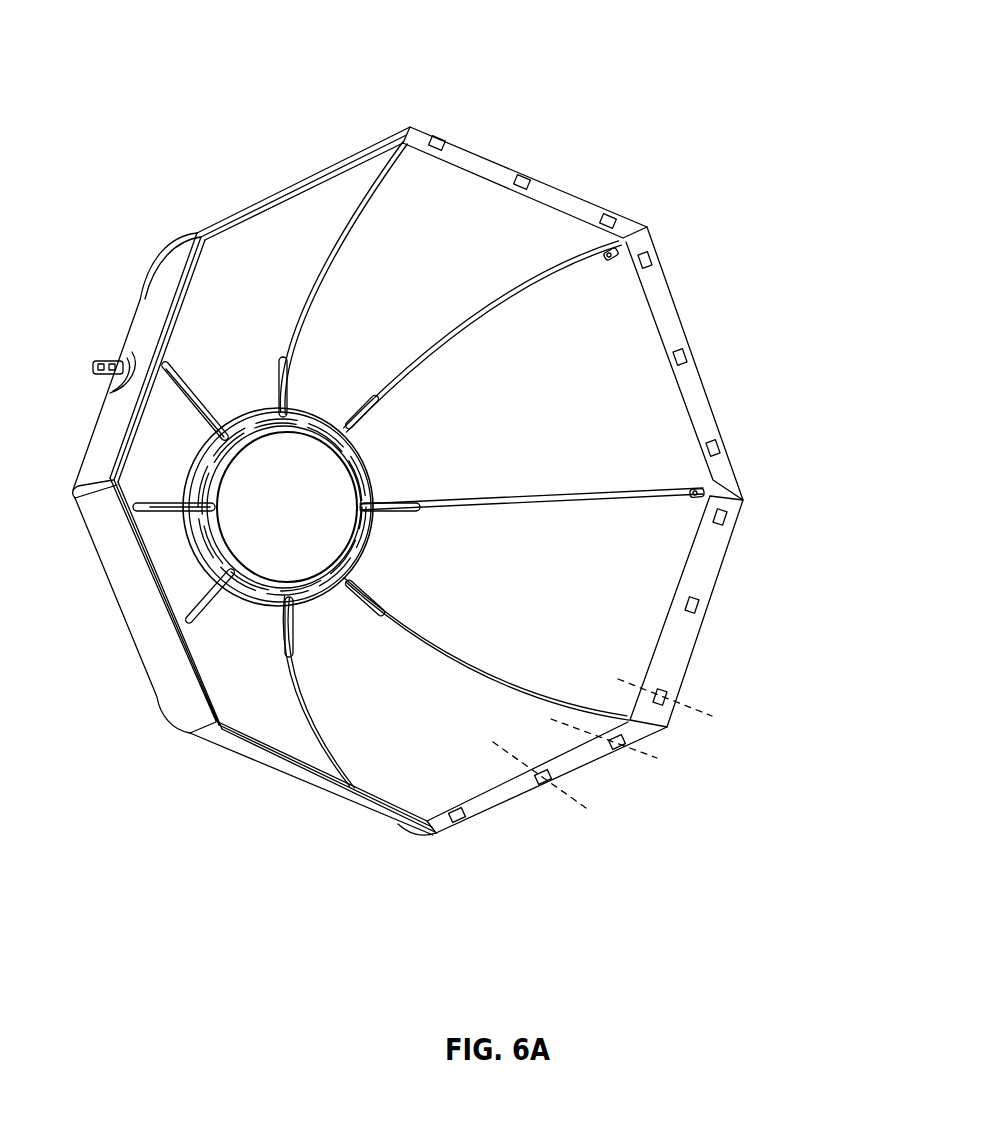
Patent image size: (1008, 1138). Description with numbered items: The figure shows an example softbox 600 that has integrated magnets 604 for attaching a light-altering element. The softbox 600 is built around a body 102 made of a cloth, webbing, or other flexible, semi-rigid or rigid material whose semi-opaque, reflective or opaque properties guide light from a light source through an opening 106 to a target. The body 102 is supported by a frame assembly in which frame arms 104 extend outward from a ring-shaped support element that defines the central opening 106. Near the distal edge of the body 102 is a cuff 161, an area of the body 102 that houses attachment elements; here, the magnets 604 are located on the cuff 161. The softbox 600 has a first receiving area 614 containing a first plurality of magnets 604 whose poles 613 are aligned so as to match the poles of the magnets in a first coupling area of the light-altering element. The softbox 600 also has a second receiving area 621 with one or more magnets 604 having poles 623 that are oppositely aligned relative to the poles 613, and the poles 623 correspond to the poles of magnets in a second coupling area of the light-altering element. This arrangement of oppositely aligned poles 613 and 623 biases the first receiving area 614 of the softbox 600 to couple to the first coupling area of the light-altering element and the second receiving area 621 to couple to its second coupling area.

The softbox 600 is at (142, 46).
The body 102 is at (243, 242).
The frame arms 104 is at (313, 268).
The opening 106 is at (306, 518).
The cuff 161 is at (480, 163).
The magnets 604 is at (442, 138).
The poles 613 is at (608, 662).
The first receiving area 614 is at (726, 797).
The second receiving area 621 is at (604, 853).
The poles 623 is at (507, 752).